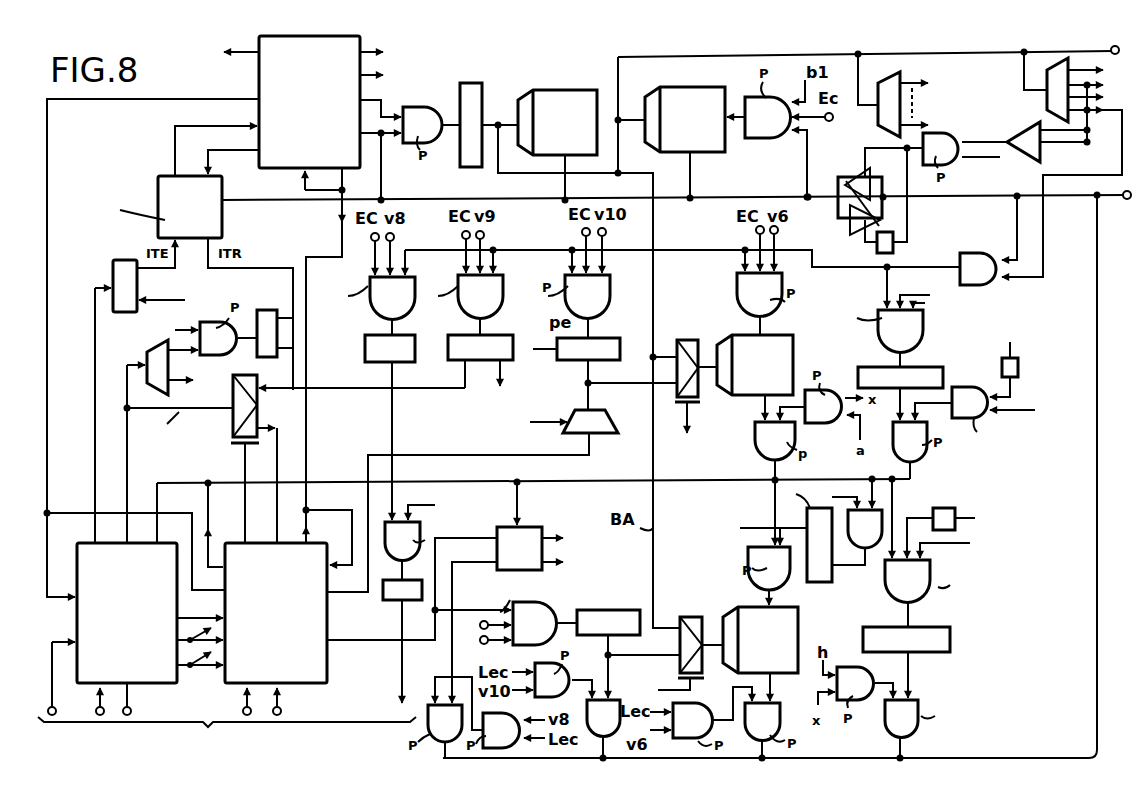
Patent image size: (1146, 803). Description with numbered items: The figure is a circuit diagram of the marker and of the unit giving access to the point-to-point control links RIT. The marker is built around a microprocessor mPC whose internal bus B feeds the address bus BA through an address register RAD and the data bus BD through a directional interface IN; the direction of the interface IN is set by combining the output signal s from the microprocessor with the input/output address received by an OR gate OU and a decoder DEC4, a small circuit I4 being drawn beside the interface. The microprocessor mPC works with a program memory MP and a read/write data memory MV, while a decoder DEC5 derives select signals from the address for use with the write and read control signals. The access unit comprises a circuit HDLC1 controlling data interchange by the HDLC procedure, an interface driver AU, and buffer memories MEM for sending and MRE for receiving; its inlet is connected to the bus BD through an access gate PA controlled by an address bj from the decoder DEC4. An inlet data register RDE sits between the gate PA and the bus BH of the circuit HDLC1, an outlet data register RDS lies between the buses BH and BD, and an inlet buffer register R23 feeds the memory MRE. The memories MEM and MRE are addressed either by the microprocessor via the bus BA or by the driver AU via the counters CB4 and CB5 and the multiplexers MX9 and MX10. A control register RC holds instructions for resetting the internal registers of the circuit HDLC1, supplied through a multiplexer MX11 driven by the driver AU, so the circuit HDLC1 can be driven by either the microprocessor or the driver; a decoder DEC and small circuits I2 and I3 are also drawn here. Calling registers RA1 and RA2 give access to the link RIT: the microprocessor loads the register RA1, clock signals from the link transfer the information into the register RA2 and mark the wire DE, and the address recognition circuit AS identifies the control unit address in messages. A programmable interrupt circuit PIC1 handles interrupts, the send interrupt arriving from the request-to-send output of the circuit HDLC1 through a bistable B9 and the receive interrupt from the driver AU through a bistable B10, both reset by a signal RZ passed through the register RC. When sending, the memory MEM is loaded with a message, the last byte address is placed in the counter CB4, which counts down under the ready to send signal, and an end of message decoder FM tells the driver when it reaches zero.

The microprocessor mPC is at (259, 72).
The programmable interrupt circuit PIC1 is at (169, 193).
The bistable B9 is at (114, 262).
The decoder DEC is at (148, 362).
The bistable B10 is at (267, 317).
The multiplexer MX11 is at (233, 426).
The bus of the HDLC1 circuit BH is at (194, 482).
The internal bus B is at (460, 199).
The HDLC control circuit HDLC1 is at (163, 680).
The interface driver AU is at (310, 668).
The point-to-point links RIT is at (227, 737).
The address register RAD is at (473, 85).
The program memory MP is at (560, 90).
The read/write data memory MV is at (672, 87).
The decoder DEC5 is at (876, 118).
The decoder DEC4 is at (1047, 97).
The address bus BA is at (1101, 41).
The data bus BD is at (1117, 208).
The OR gate OU is at (1022, 145).
The directional interface IN is at (848, 177).
The inverter I4 is at (892, 252).
The access gate PA is at (972, 255).
The calling register RA1 is at (370, 362).
The control register RC is at (502, 339).
The counter CB4 is at (614, 342).
The end of message decoder FM is at (597, 437).
The multiplexer MX9 is at (690, 342).
The sending buffer memory MEM is at (780, 352).
The inlet data register RDE is at (925, 370).
The inverter I2 is at (1014, 368).
The inlet buffer register R23 is at (810, 590).
The inverter I3 is at (934, 508).
The outlet data register RDS is at (953, 641).
The receiving buffer memory MRE is at (782, 645).
The multiplexer MX10 is at (690, 617).
The counter CB5 is at (596, 610).
The address recognition circuit AS is at (505, 527).
The calling register RA2 is at (387, 598).